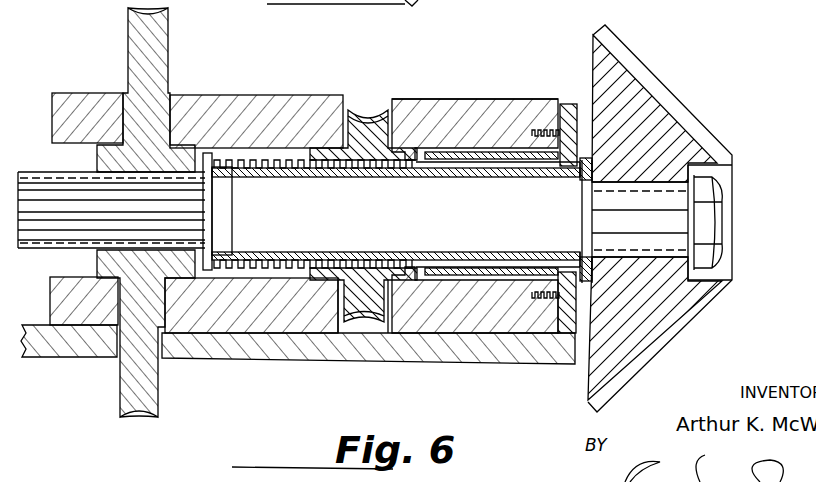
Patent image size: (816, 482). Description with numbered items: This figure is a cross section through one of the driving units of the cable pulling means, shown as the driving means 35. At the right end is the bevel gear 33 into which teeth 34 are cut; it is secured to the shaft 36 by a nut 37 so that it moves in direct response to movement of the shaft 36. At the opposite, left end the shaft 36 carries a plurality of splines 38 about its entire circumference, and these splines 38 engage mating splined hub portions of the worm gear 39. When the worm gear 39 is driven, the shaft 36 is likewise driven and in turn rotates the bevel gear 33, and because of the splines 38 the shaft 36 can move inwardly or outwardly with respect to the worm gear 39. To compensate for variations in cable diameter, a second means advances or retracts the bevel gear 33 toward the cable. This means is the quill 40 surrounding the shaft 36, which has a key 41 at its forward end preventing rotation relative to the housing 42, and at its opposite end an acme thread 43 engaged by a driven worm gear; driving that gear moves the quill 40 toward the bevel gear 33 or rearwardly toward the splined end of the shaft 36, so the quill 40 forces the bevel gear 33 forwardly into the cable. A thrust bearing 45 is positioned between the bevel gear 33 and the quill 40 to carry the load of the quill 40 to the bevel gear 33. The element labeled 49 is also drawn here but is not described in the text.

The bevel gear 33 is at (638, 103).
The teeth 34 is at (698, 133).
The driving means 35 is at (481, 96).
The shaft 36 is at (35, 203).
The nut 37 is at (705, 218).
The splines 38 is at (44, 224).
The worm gear 39 is at (153, 52).
The quill 40 is at (277, 163).
The key 41 is at (487, 172).
The housing 42 is at (418, 120).
The acme thread 43 is at (247, 160).
The thrust bearing 45 is at (585, 156).
The locking nut 49 is at (366, 115).